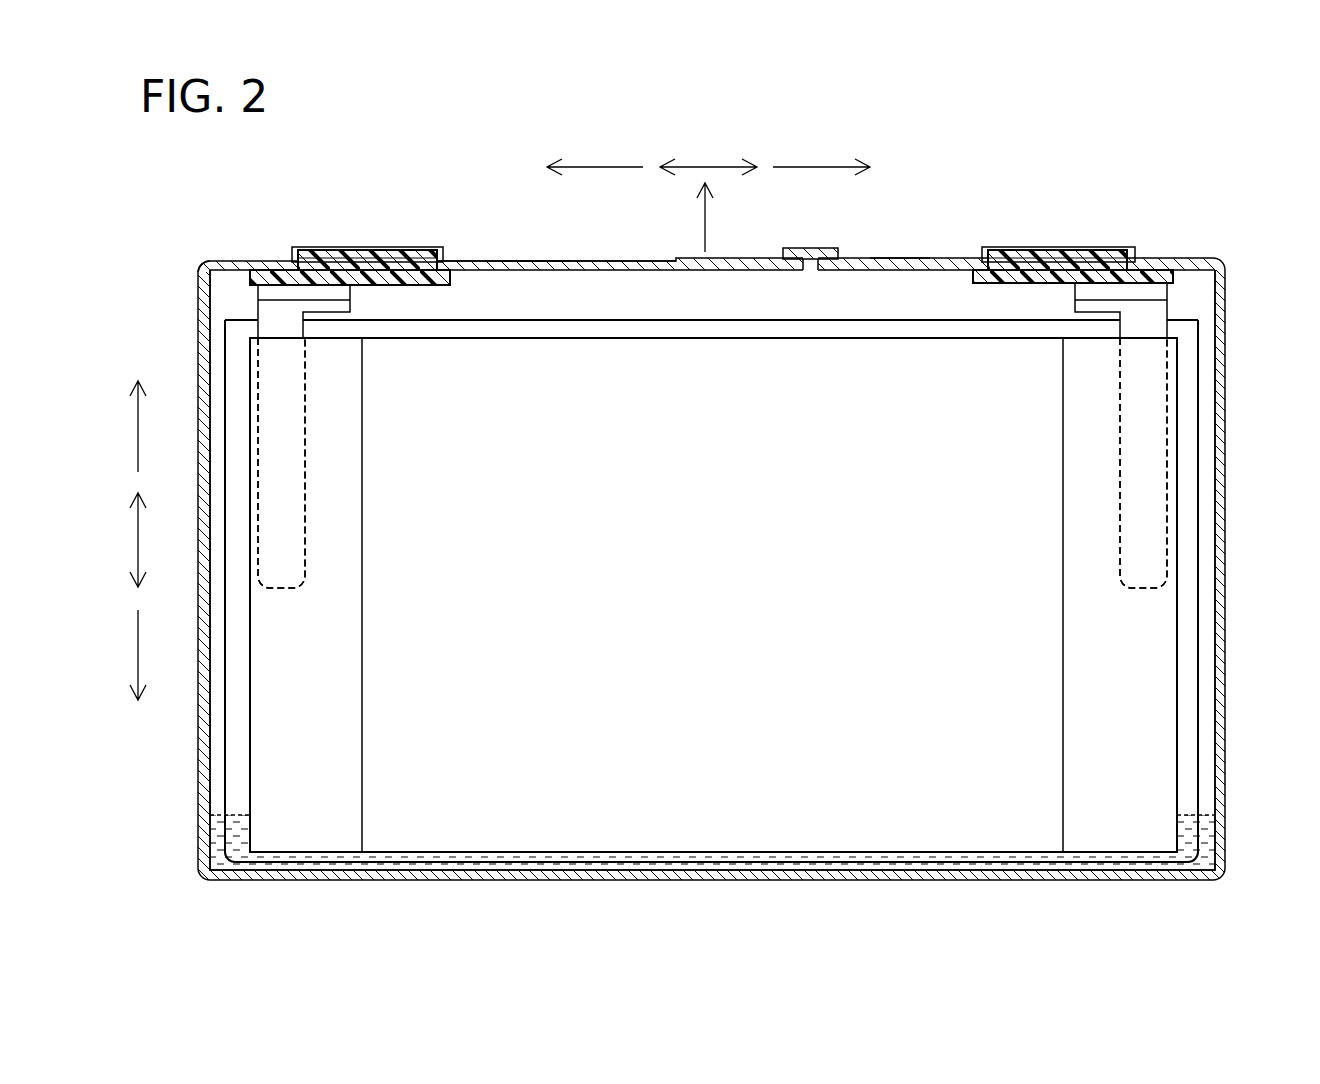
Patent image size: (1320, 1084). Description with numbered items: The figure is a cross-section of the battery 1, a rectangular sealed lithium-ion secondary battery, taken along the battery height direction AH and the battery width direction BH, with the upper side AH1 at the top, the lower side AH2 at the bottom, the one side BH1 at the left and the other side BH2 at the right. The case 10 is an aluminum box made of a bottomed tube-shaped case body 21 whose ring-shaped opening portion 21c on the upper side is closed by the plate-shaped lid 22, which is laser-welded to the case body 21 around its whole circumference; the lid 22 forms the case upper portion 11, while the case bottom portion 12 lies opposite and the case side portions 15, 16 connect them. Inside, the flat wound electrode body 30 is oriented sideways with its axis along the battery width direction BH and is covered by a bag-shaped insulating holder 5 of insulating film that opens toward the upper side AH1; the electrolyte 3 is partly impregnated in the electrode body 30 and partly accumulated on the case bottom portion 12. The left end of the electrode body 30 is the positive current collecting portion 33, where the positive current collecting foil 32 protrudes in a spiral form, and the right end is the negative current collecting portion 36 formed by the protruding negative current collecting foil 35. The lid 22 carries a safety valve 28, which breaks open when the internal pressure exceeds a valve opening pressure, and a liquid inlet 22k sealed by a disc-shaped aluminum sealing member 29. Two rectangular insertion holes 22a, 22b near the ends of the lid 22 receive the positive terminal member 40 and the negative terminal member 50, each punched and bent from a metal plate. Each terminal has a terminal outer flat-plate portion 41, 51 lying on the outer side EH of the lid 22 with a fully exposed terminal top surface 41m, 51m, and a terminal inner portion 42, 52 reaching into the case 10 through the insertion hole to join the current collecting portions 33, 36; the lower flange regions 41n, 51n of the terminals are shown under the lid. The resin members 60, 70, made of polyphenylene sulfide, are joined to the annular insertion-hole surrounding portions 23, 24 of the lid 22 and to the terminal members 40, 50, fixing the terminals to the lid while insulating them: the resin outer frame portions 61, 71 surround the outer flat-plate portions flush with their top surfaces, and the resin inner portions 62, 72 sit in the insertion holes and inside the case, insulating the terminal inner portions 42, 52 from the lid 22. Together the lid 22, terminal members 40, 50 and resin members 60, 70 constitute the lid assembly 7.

The battery 1 is at (1152, 142).
The electrolyte 3 is at (1193, 835).
The insulating holder 5 is at (1200, 468).
The lid assembly 7 is at (900, 258).
The case 10 is at (863, 258).
The case upper portion 11 is at (533, 262).
The case bottom portion 12 is at (1168, 878).
The case side portion 15 is at (205, 708).
The case side portion 16 is at (1220, 612).
The case body 21 is at (1220, 543).
The opening portion 21c is at (203, 280).
The lid 22 is at (711, 265).
The insertion hole 22a is at (423, 247).
The insertion hole 22b is at (1001, 247).
The liquid inlet 22k is at (810, 272).
The insertion-hole surrounding portion 23 is at (281, 261).
The insertion-hole surrounding portion 24 is at (972, 252).
The safety valve 28 is at (634, 262).
The sealing member 29 is at (788, 250).
The electrode body 30 is at (703, 795).
The positive current collecting foil 32 is at (281, 463).
The positive current collecting portion 33 is at (309, 793).
The negative current collecting foil 35 is at (1143, 463).
The negative current collecting portion 36 is at (1100, 805).
The positive terminal member 40 is at (312, 247).
The terminal outer flat-plate portion 41 is at (372, 247).
The terminal top surface 41m is at (340, 247).
The positive terminal flange portion 41n is at (368, 278).
The terminal inner portion 42 is at (277, 327).
The negative terminal member 50 is at (1105, 247).
The terminal outer flat-plate portion 51 is at (1045, 247).
The terminal top surface 51m is at (1086, 247).
The negative terminal flange portion 51n is at (1058, 282).
The terminal inner portion 52 is at (1148, 323).
The resin member 60 is at (425, 278).
The resin outer frame portion 61 is at (409, 247).
The resin inner portion 62 is at (397, 278).
The resin member 70 is at (1003, 282).
The resin outer frame portion 71 is at (1014, 247).
The resin inner portion 72 is at (1035, 282).
The upper side AH1 is at (117, 426).
The battery height direction AH is at (121, 540).
The lower side AH2 is at (117, 655).
The one side BH1 is at (595, 155).
The battery width direction BH is at (708, 155).
The other side BH2 is at (821, 155).
The outer side EH is at (689, 217).